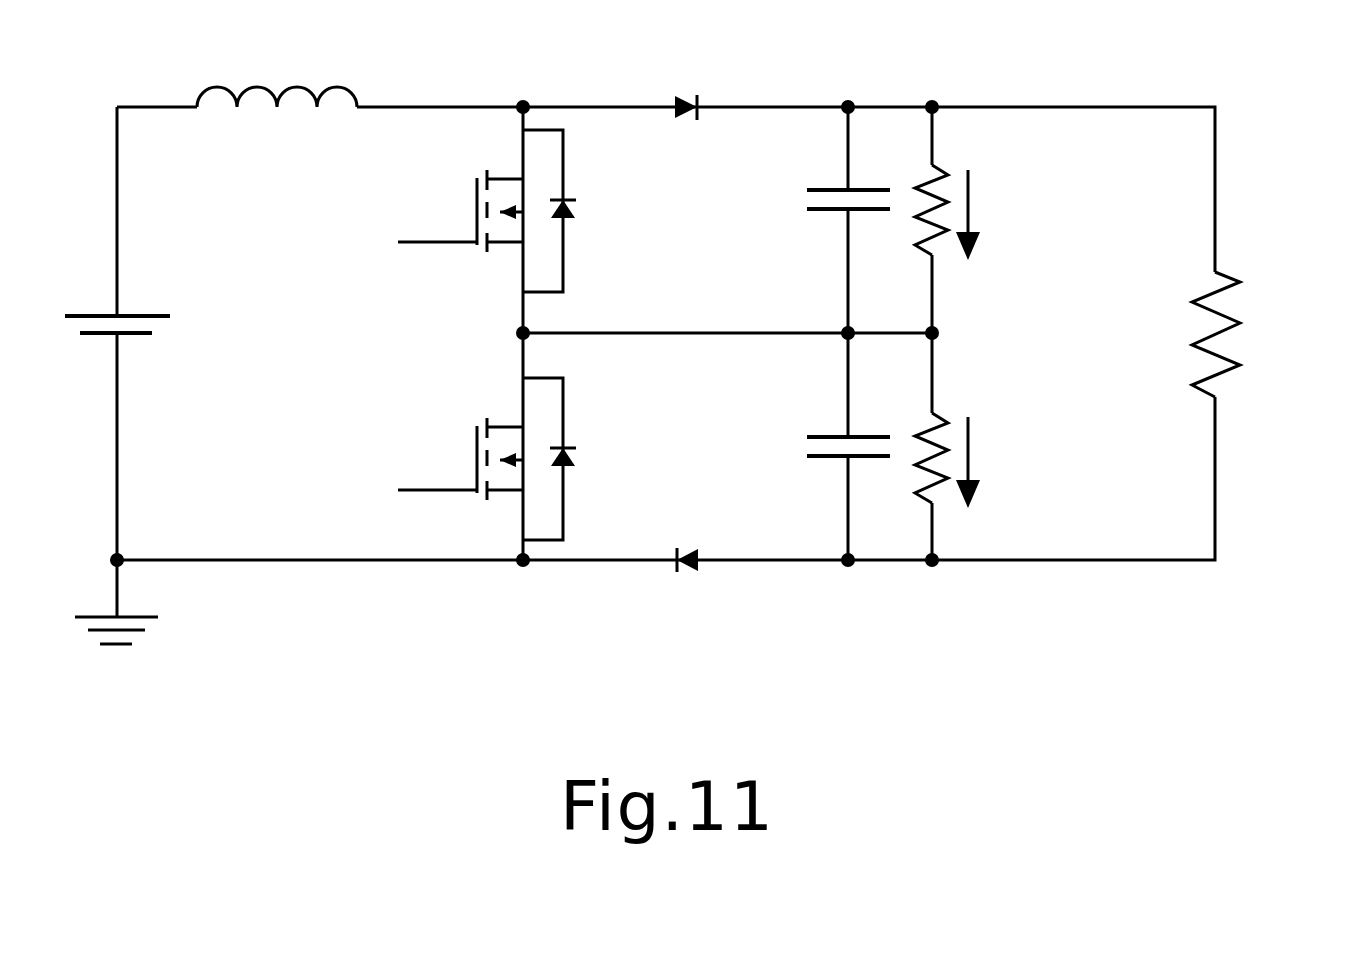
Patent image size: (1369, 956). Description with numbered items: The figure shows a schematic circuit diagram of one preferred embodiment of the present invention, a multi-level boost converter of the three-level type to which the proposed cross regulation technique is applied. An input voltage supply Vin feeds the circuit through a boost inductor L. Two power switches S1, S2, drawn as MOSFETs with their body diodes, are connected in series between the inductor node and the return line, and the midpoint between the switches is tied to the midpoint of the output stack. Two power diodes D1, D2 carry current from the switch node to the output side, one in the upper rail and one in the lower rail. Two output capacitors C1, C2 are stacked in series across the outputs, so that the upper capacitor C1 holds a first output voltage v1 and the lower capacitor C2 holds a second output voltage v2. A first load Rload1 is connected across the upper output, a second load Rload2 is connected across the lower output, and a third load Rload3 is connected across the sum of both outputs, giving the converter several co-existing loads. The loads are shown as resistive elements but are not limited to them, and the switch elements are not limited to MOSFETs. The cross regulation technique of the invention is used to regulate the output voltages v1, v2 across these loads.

The boost inductor L is at (277, 134).
The input voltage supply Vin is at (168, 335).
The power switch S1 is at (487, 211).
The power switch S2 is at (487, 459).
The power diode D1 is at (665, 142).
The power diode D2 is at (665, 527).
The output capacitor C1 is at (812, 220).
The output capacitor C2 is at (812, 428).
The load Rload1 is at (1027, 210).
The load Rload2 is at (1030, 458).
The load Rload3 is at (1277, 334).
The first output voltage v1 is at (989, 215).
The second output voltage v2 is at (989, 462).